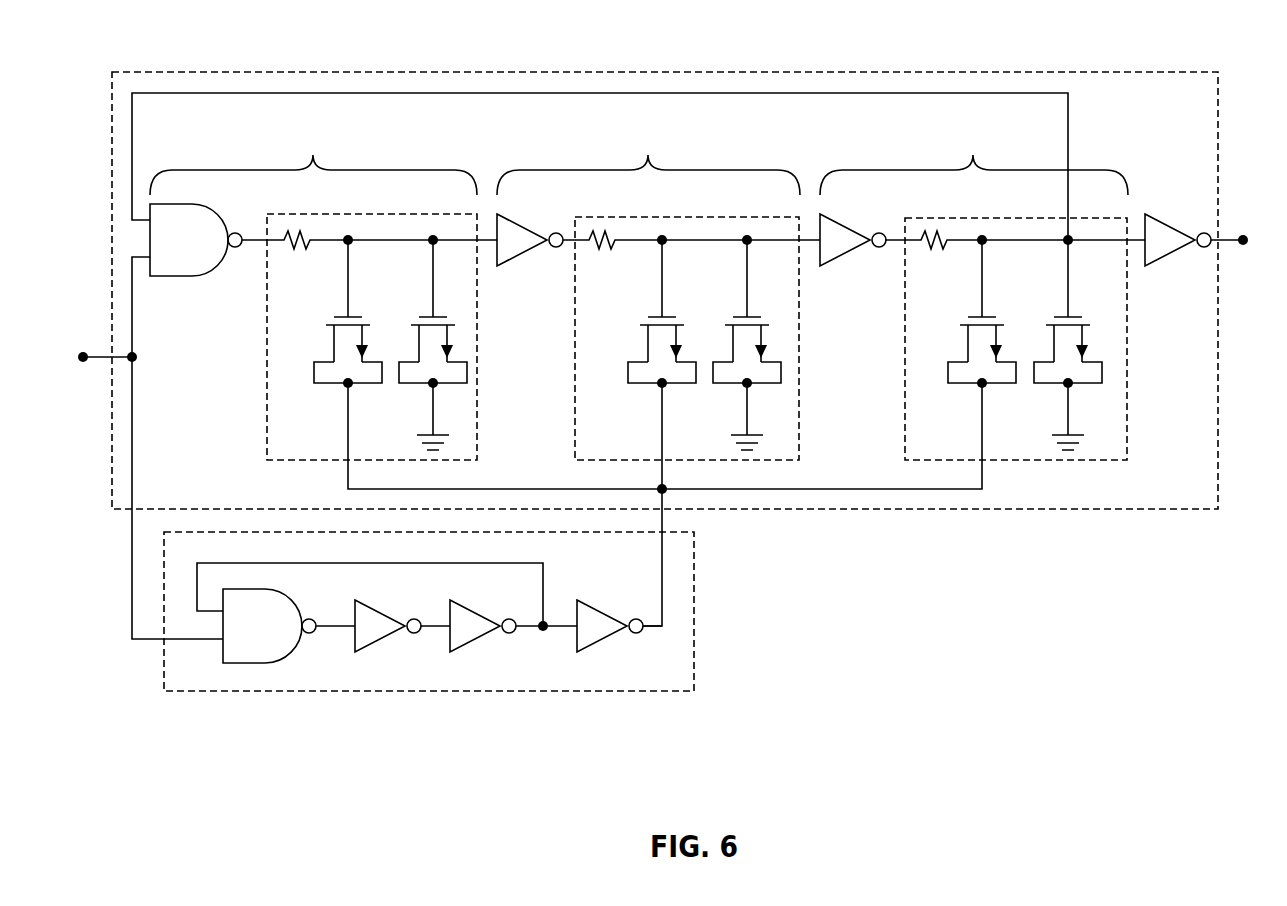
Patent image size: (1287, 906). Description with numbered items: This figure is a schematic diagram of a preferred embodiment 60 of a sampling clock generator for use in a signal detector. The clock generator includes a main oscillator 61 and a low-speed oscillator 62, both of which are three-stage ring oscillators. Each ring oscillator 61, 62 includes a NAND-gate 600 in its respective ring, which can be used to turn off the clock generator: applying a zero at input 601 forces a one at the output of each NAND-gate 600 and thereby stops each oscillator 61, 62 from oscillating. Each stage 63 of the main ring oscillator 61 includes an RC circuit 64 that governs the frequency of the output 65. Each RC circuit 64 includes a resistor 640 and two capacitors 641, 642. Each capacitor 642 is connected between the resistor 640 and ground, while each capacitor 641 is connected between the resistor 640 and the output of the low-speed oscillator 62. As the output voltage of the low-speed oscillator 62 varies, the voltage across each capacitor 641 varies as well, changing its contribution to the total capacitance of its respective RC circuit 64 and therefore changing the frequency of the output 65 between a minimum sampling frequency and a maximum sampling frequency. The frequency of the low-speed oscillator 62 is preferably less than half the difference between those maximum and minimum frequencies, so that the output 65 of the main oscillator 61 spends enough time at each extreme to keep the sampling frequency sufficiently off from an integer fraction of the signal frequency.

The preferred embodiment of sampling clock generator 60 is at (629, 44).
The main oscillator 61 is at (279, 71).
The low-speed oscillator 62 is at (694, 613).
The stage 63 is at (639, 160).
The RC circuit 64 is at (267, 368).
The output 65 is at (1229, 240).
The NAND-gate 600 is at (172, 276).
The input 601 is at (106, 357).
The resistor 640 is at (282, 250).
The capacitor 641 is at (330, 384).
The capacitor 642 is at (415, 384).